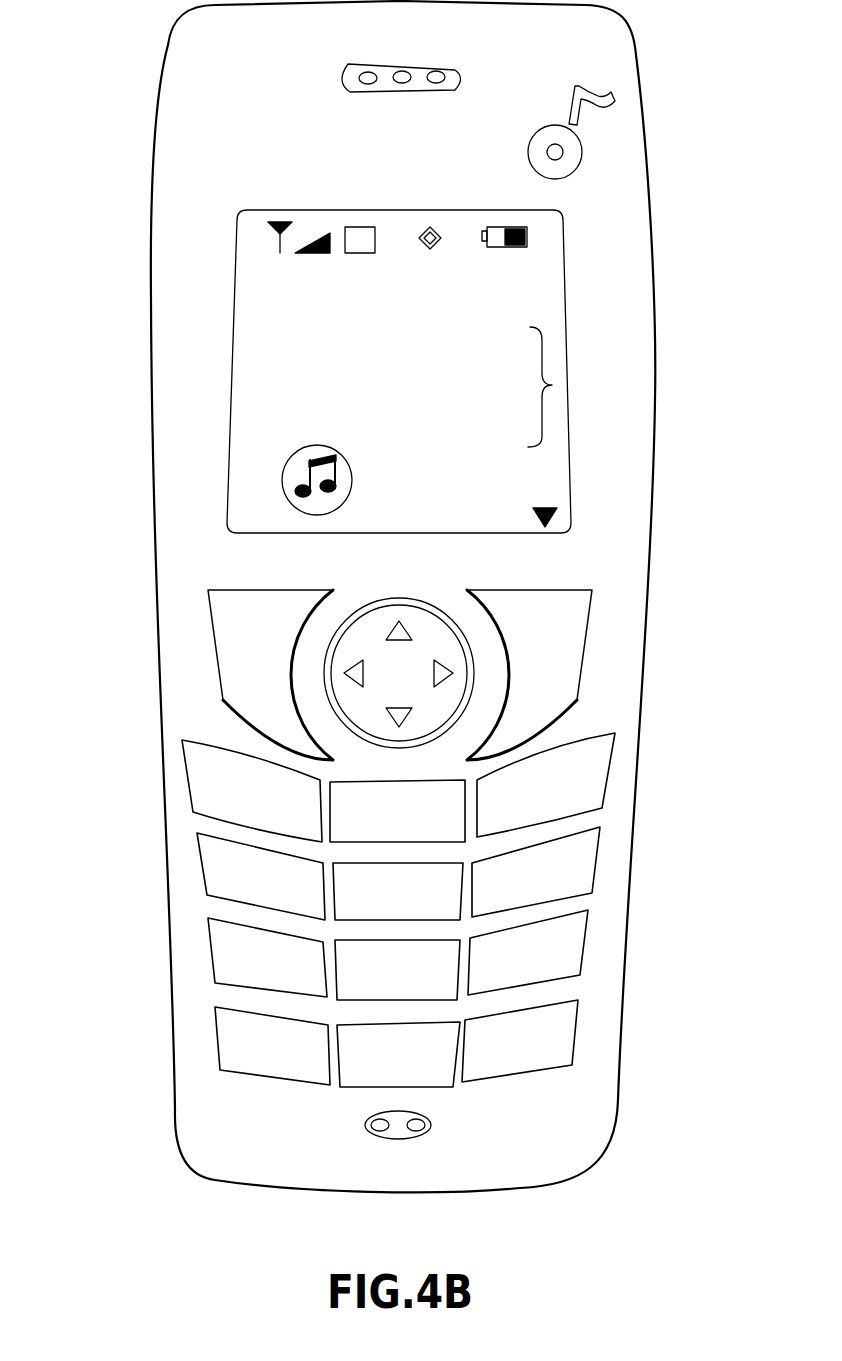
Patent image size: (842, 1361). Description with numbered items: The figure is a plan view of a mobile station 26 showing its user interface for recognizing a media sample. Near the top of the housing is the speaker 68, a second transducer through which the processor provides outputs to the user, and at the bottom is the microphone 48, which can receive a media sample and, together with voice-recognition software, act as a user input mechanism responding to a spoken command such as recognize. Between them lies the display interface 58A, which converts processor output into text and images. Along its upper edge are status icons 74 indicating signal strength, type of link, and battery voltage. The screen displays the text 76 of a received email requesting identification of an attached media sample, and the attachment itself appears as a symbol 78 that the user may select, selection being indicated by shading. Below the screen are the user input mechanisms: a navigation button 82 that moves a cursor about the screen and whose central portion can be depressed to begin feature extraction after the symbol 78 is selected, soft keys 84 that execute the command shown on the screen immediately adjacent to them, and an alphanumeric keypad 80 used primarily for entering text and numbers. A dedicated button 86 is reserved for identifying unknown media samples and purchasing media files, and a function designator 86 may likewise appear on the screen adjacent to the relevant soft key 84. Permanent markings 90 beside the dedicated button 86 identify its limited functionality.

The mobile station 26 is at (108, 836).
The microphone 48 is at (373, 1137).
The display interface 58A is at (558, 458).
The speaker 68 is at (340, 83).
The status icons 74 is at (547, 235).
The text 76 is at (552, 385).
The symbol 78 is at (285, 495).
The alphanumeric keypad 80 is at (570, 945).
The navigation button 82 is at (440, 607).
The soft key 84 is at (555, 667).
The dedicated button 86 is at (572, 153).
The permanent markings 90 is at (602, 88).